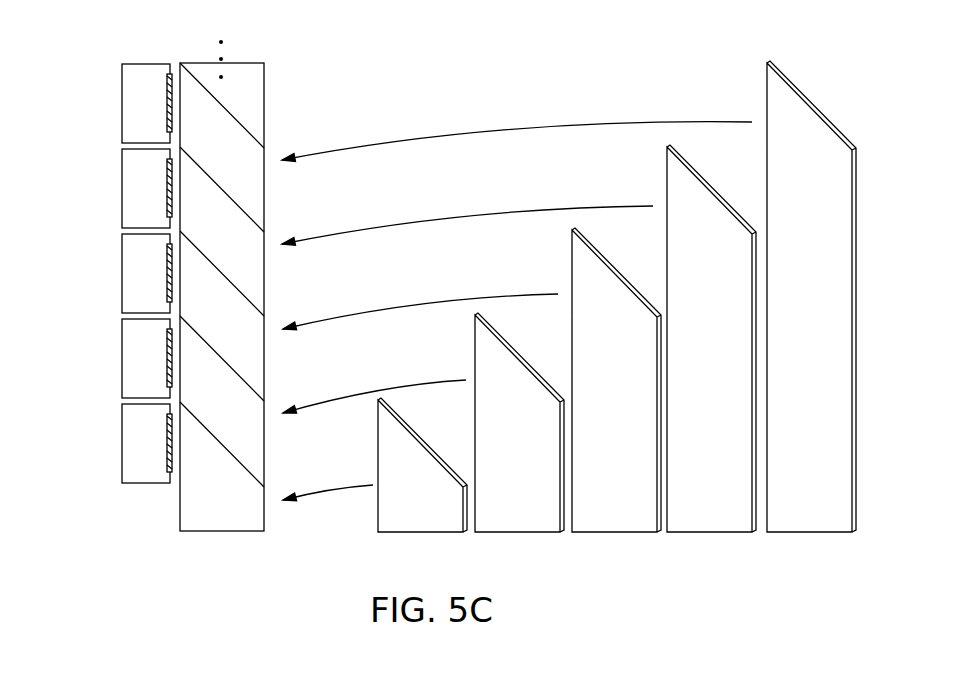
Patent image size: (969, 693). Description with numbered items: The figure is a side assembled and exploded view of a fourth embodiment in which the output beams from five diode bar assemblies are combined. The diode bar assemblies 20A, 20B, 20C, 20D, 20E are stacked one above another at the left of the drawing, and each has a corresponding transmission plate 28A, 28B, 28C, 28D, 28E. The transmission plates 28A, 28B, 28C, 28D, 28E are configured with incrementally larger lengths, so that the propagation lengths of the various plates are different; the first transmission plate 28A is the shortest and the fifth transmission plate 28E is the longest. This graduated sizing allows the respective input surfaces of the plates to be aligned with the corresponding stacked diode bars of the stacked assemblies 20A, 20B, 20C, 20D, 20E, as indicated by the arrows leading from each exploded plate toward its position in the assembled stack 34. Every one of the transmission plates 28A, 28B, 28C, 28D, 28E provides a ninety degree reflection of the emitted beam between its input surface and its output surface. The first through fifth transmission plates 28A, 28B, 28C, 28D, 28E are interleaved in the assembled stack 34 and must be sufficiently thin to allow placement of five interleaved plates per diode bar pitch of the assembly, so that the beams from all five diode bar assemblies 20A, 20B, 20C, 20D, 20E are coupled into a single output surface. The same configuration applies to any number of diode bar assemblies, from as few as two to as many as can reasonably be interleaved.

The diode bar assembly 20A is at (122, 444).
The diode bar assembly 20B is at (122, 359).
The diode bar assembly 20C is at (122, 274).
The diode bar assembly 20D is at (122, 189).
The diode bar assembly 20E is at (122, 104).
The transmission plate 28A is at (443, 520).
The transmission plate 28B is at (540, 520).
The transmission plate 28C is at (637, 520).
The transmission plate 28D is at (733, 520).
The transmission plate 28E is at (833, 520).
The composite display 34 is at (231, 527).